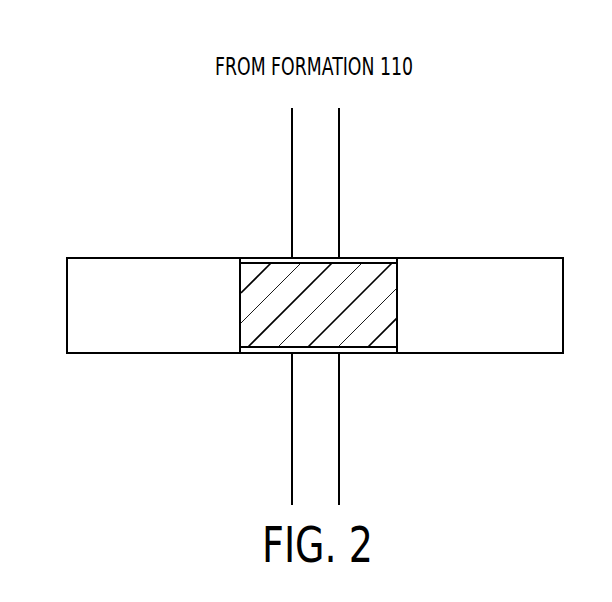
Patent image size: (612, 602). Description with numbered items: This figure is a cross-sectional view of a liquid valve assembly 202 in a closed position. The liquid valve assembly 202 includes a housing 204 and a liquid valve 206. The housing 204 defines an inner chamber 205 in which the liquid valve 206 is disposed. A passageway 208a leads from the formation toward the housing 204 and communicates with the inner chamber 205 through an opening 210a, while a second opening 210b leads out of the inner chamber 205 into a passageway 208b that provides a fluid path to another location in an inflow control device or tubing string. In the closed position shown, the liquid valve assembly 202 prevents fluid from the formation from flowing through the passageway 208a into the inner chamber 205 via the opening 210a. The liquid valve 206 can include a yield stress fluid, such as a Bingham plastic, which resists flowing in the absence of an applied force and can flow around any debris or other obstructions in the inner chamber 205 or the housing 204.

The liquid valve assembly 202 is at (117, 138).
The housing 204 is at (127, 252).
The inner chamber 205 is at (89, 316).
The liquid valve 206 is at (411, 312).
The passageway 208a is at (312, 154).
The passageway 208b is at (312, 474).
The opening 210a is at (312, 255).
The opening 210b is at (311, 359).